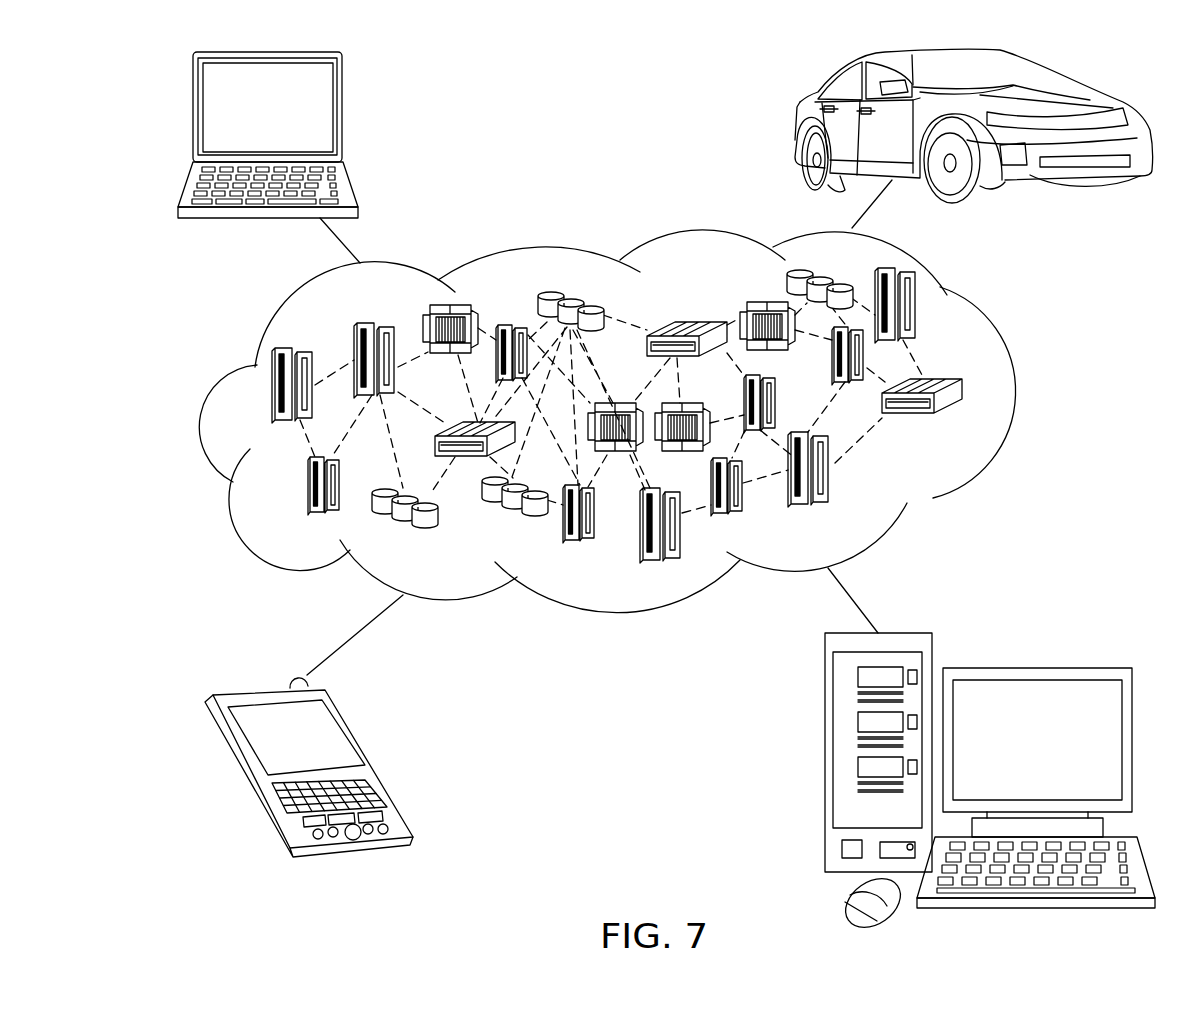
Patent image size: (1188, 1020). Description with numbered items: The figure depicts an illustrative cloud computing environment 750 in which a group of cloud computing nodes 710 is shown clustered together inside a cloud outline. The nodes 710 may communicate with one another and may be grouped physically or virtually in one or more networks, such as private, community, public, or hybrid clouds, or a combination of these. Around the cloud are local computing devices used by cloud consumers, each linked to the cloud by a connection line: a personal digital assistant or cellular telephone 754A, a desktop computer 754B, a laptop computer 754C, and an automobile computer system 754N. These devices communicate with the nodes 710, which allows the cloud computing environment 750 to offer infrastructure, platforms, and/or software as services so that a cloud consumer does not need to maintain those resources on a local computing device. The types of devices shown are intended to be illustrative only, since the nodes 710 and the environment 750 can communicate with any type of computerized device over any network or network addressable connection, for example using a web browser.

The cloud computing nodes 710 is at (968, 440).
The cloud computing environment 750 is at (1012, 352).
The personal digital assistant or cellular telephone 754A is at (363, 763).
The desktop computer 754B is at (1030, 668).
The laptop computer 754C is at (342, 95).
The automobile computer system 754N is at (798, 118).